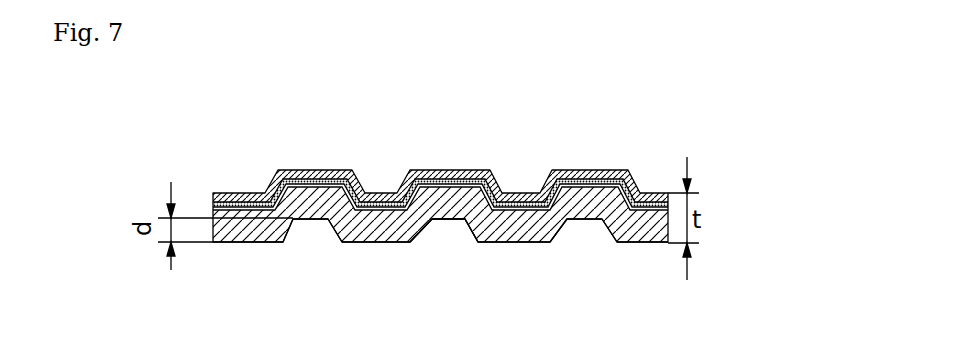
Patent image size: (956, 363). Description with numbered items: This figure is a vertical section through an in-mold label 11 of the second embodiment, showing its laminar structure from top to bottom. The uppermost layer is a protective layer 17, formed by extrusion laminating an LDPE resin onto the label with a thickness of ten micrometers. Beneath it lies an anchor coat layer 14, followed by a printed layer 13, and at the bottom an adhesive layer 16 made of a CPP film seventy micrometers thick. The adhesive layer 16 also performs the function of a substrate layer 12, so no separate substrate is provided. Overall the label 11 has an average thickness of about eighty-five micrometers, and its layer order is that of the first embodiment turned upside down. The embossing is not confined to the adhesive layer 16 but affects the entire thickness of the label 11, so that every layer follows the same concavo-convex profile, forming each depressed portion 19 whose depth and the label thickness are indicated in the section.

The label 11 is at (650, 168).
The substrate layer 12 is at (537, 230).
The printed layer 13 is at (318, 185).
The anchor coat layer 14 is at (592, 187).
The adhesive layer 16 is at (445, 253).
The protective layer 17 is at (452, 173).
The depressed portion 19 is at (430, 220).